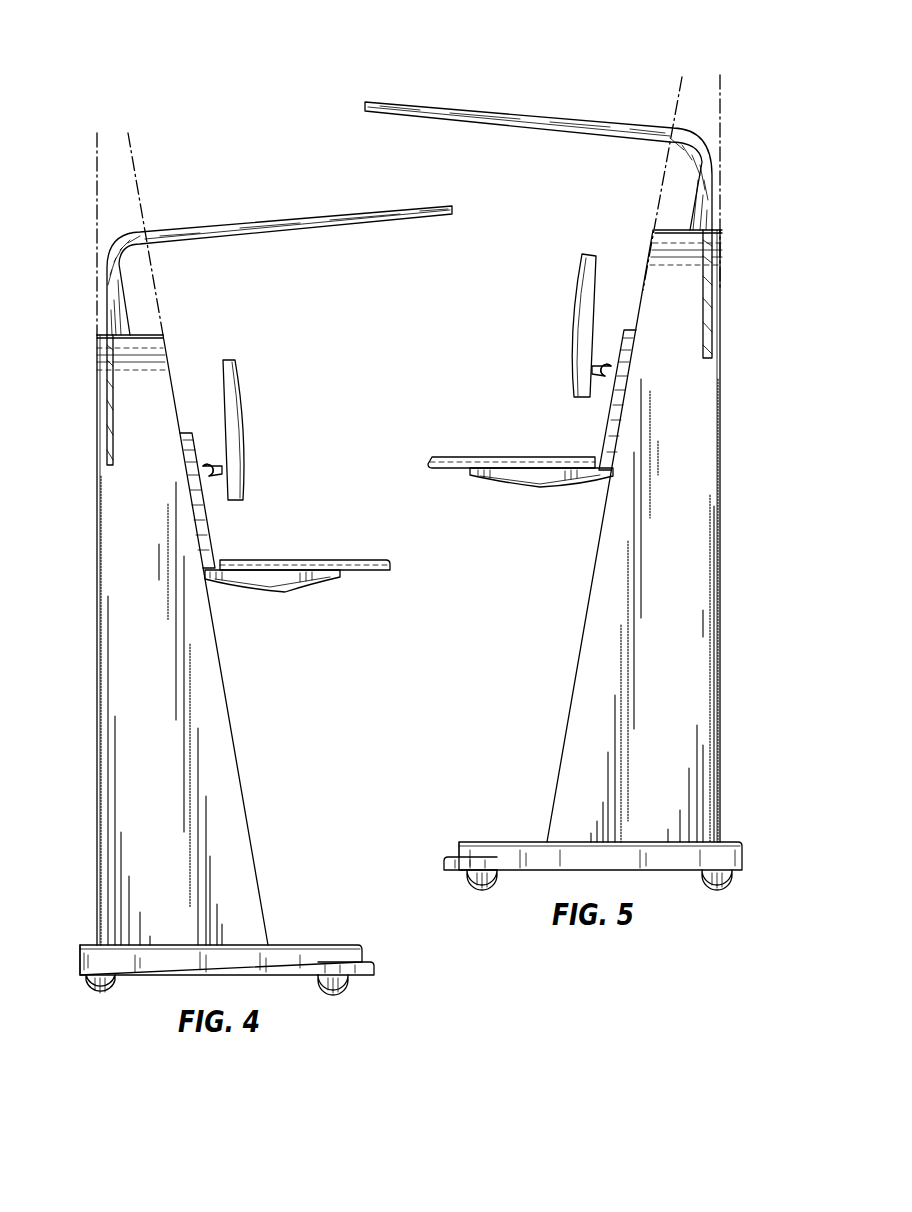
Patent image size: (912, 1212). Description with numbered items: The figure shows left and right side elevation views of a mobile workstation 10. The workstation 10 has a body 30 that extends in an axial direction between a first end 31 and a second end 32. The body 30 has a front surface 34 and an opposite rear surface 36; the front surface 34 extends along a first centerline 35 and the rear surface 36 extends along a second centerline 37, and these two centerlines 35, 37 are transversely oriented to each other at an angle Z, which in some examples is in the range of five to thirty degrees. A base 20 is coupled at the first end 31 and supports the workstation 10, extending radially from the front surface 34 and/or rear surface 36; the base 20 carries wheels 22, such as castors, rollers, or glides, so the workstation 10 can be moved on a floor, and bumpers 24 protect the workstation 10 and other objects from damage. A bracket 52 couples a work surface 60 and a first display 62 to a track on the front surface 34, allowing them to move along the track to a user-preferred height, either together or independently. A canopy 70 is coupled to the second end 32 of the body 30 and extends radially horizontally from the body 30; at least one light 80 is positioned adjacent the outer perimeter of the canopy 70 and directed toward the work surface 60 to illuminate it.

In FIG. 4, the mobile workstation 10 is at (332, 412).
In FIG. 5, the mobile workstation 10 is at (486, 310).
In FIG. 4, the base 20 is at (298, 962).
In FIG. 5, the base 20 is at (516, 857).
In FIG. 4, the wheels 22 is at (102, 992).
In FIG. 5, the wheels 22 is at (490, 890).
In FIG. 4, the bumpers 24 is at (372, 967).
In FIG. 5, the bumpers 24 is at (446, 863).
In FIG. 4, the body 30 is at (90, 630).
In FIG. 5, the body 30 is at (732, 520).
In FIG. 4, the first end 31 is at (90, 903).
In FIG. 5, the first end 31 is at (730, 797).
In FIG. 4, the second end 32 is at (95, 350).
In FIG. 5, the second end 32 is at (727, 248).
In FIG. 4, the front surface 34 is at (228, 715).
In FIG. 5, the front surface 34 is at (585, 602).
In FIG. 4, the first centerline 35 is at (140, 200).
In FIG. 5, the first centerline 35 is at (673, 122).
In FIG. 4, the rear surface 36 is at (96, 575).
In FIG. 5, the rear surface 36 is at (722, 473).
In FIG. 4, the second centerline 37 is at (95, 228).
In FIG. 5, the second centerline 37 is at (723, 127).
In FIG. 4, the bracket 52 is at (186, 500).
In FIG. 5, the bracket 52 is at (632, 396).
In FIG. 4, the work surface 60 is at (288, 558).
In FIG. 5, the work surface 60 is at (526, 455).
In FIG. 4, the first display 62 is at (241, 408).
In FIG. 5, the first display 62 is at (580, 296).
In FIG. 4, the canopy 70 is at (256, 222).
In FIG. 5, the canopy 70 is at (566, 116).
In FIG. 4, the light 80 is at (316, 224).
In FIG. 5, the light 80 is at (502, 122).